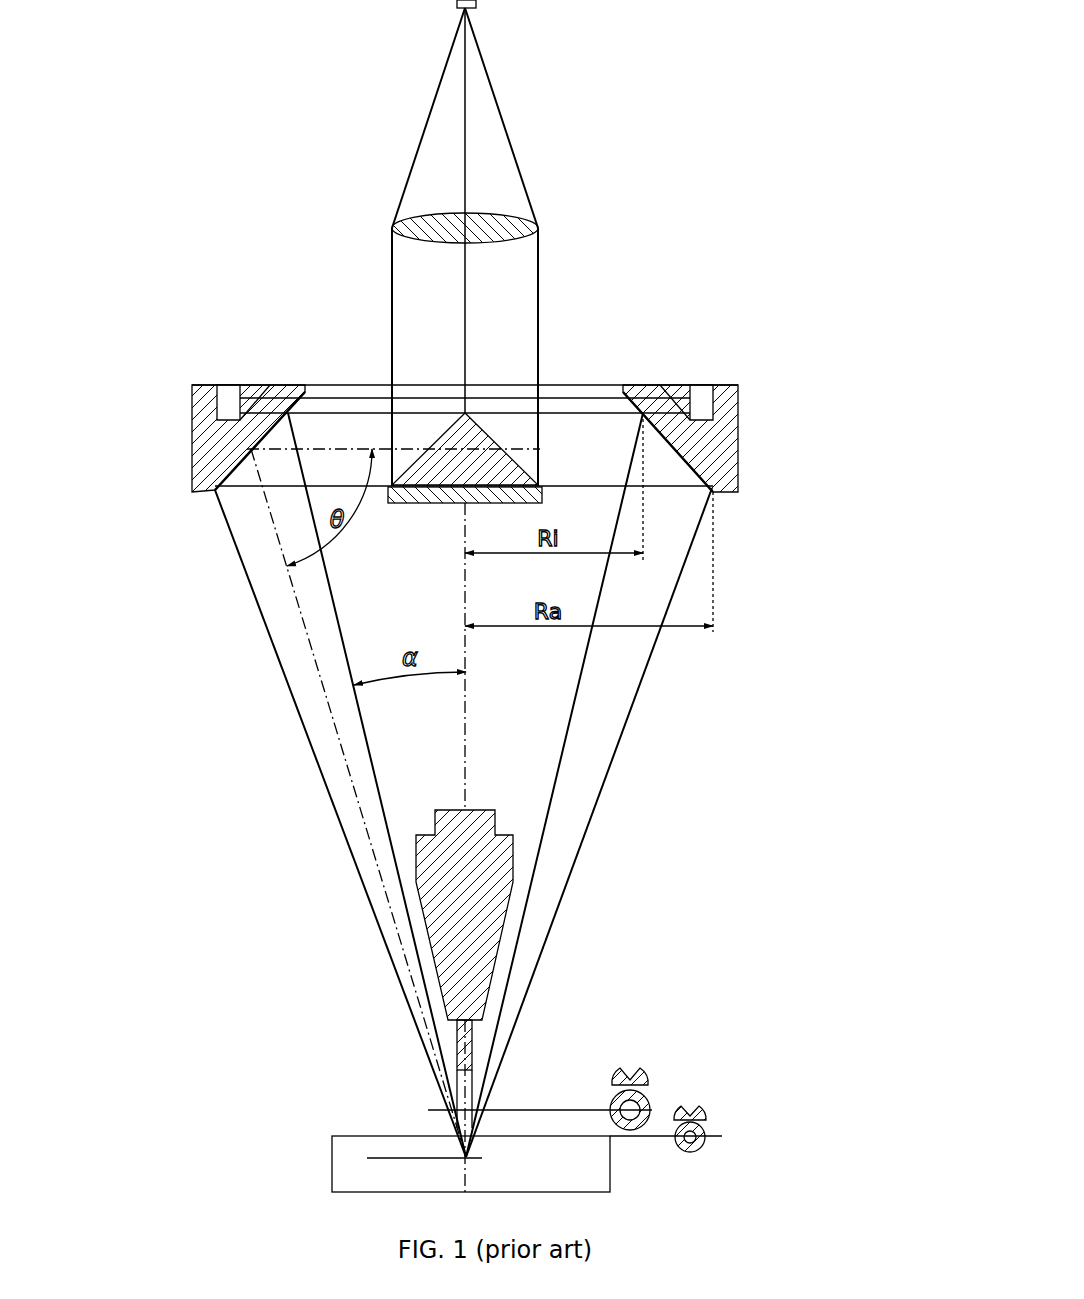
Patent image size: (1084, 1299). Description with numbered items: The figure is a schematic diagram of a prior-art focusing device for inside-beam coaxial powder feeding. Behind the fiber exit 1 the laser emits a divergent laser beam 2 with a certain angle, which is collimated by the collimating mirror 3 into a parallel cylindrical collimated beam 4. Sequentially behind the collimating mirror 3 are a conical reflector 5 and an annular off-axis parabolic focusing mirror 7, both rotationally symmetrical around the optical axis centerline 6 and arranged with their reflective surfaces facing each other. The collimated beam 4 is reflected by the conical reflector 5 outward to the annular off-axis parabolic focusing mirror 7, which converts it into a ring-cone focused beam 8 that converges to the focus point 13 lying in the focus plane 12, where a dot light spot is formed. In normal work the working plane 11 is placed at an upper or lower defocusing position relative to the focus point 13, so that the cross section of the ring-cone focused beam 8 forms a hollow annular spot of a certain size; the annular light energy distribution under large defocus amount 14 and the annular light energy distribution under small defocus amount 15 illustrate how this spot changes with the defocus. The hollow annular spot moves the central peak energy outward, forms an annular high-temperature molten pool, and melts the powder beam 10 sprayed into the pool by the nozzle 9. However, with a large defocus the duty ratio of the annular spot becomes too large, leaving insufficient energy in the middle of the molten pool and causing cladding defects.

The fiber exit 1 is at (468, 12).
The divergent laser beam 2 is at (483, 75).
The collimating mirror 3 is at (515, 228).
The collimated beam 4 is at (537, 318).
The conical reflector 5 is at (482, 460).
The optical axis centerline 6 is at (362, 449).
The annular off-axis parabolic focusing mirror 7 is at (275, 408).
The ring-cone focused beam 8 is at (315, 752).
The nozzle 9 is at (440, 895).
The powder beam 10 is at (464, 1090).
The working plane 11 is at (432, 1136).
The focus plane 12 is at (390, 1158).
The focus point 13 is at (502, 1110).
The annular light energy distribution under large defocus amount 14 is at (630, 1085).
The annular light energy distribution under small defocus amount 15 is at (690, 1120).